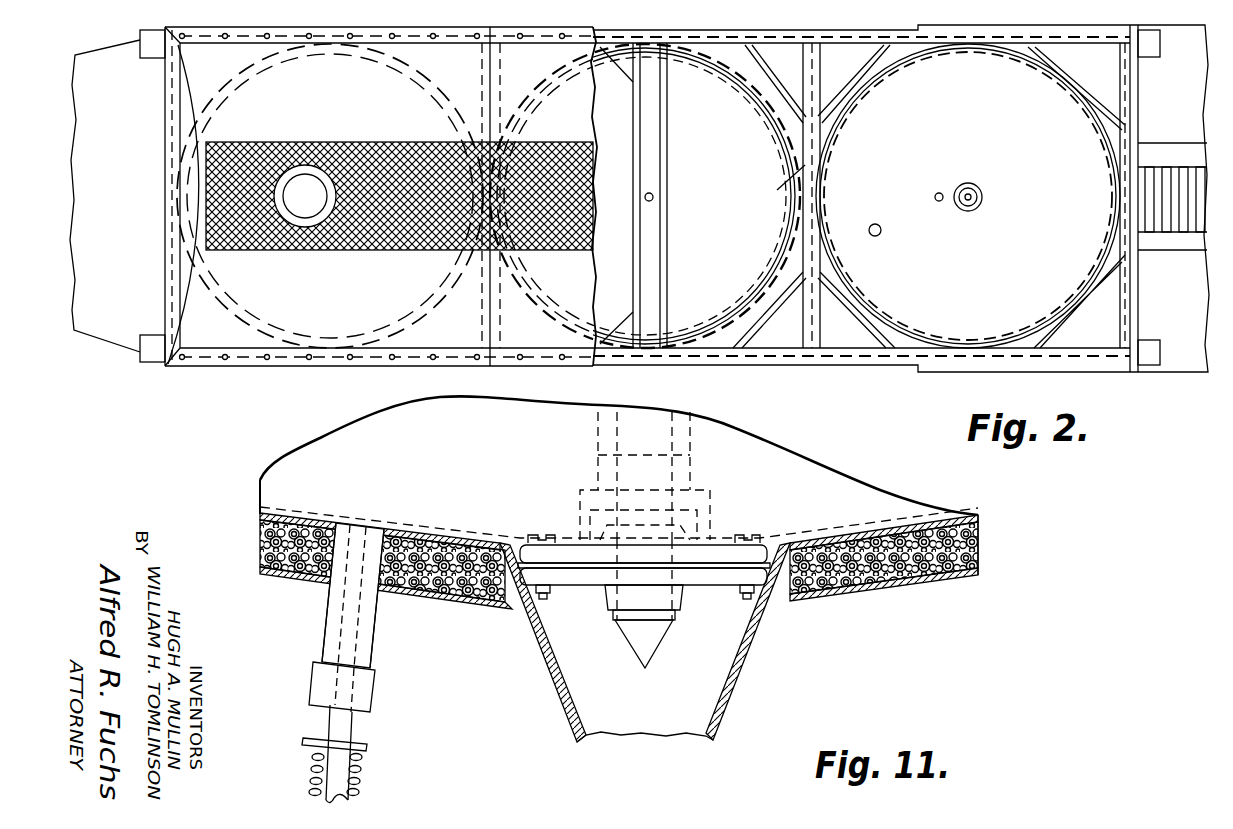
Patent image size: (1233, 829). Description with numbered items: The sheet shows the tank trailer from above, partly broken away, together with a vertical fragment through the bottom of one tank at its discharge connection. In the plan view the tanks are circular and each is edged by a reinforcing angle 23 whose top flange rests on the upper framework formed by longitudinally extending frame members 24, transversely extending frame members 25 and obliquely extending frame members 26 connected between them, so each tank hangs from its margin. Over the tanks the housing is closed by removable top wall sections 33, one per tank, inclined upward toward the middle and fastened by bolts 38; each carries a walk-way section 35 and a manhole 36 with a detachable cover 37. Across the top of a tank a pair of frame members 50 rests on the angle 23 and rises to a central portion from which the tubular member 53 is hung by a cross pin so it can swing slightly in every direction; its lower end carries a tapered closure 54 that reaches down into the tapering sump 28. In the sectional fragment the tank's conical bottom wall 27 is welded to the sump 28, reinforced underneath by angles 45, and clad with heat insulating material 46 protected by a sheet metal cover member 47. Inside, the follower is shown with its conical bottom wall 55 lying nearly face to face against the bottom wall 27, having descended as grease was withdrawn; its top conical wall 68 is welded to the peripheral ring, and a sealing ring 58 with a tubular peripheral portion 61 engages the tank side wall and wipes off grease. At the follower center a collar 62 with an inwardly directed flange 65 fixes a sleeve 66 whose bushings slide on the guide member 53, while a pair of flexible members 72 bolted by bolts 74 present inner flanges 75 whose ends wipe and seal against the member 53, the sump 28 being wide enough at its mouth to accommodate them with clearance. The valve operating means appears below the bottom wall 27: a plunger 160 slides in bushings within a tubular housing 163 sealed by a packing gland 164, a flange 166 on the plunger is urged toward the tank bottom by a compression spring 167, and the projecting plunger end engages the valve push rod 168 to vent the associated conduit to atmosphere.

In FIG. 2, the reinforcing angle 23 is at (770, 105).
In FIG. 2, the longitudinally extending frame member 24 is at (758, 37).
In FIG. 2, the transversely extending frame member 25 is at (482, 80).
In FIG. 2, the obliquely extending frame member 26 is at (742, 57).
In FIG. 11, the conical bottom wall 27 is at (872, 525).
In FIG. 11, the tapering sump 28 is at (758, 660).
In FIG. 2, the top wall section 33 is at (578, 115).
In FIG. 2, the walk-way section 35 is at (588, 175).
In FIG. 2, the manhole 36 is at (320, 168).
In FIG. 2, the detachable cover 37 is at (300, 222).
In FIG. 2, the bolts 38 is at (395, 46).
In FIG. 11, the angles 45 is at (925, 515).
In FIG. 11, the heat insulating material 46 is at (906, 575).
In FIG. 11, the cover member 47 is at (850, 592).
In FIG. 2, the frame members 50 is at (668, 185).
In FIG. 2, the tubular member 53 is at (654, 197).
In FIG. 11, the tubular member 53 is at (608, 455).
In FIG. 11, the tapered closure 54 is at (655, 638).
In FIG. 11, the conical bottom wall 55 is at (390, 530).
In FIG. 2, the sealing ring 58 is at (762, 283).
In FIG. 2, the tubular peripheral portion 61 is at (688, 330).
In FIG. 11, the collar 62 is at (578, 506).
In FIG. 11, the inwardly directed flange 65 is at (590, 490).
In FIG. 11, the sleeve 66 is at (563, 534).
In FIG. 2, the top conical wall 68 is at (812, 165).
In FIG. 11, the flexible members 72 is at (718, 552).
In FIG. 11, the bolts 74 is at (520, 541).
In FIG. 11, the inner flanges 75 is at (612, 604).
In FIG. 11, the plunger 160 is at (348, 727).
In FIG. 11, the tubular housing 163 is at (372, 641).
In FIG. 11, the packing gland 164 is at (370, 681).
In FIG. 11, the flange 166 is at (362, 745).
In FIG. 11, the compression spring 167 is at (360, 765).
In FIG. 11, the push rod 168 is at (325, 795).